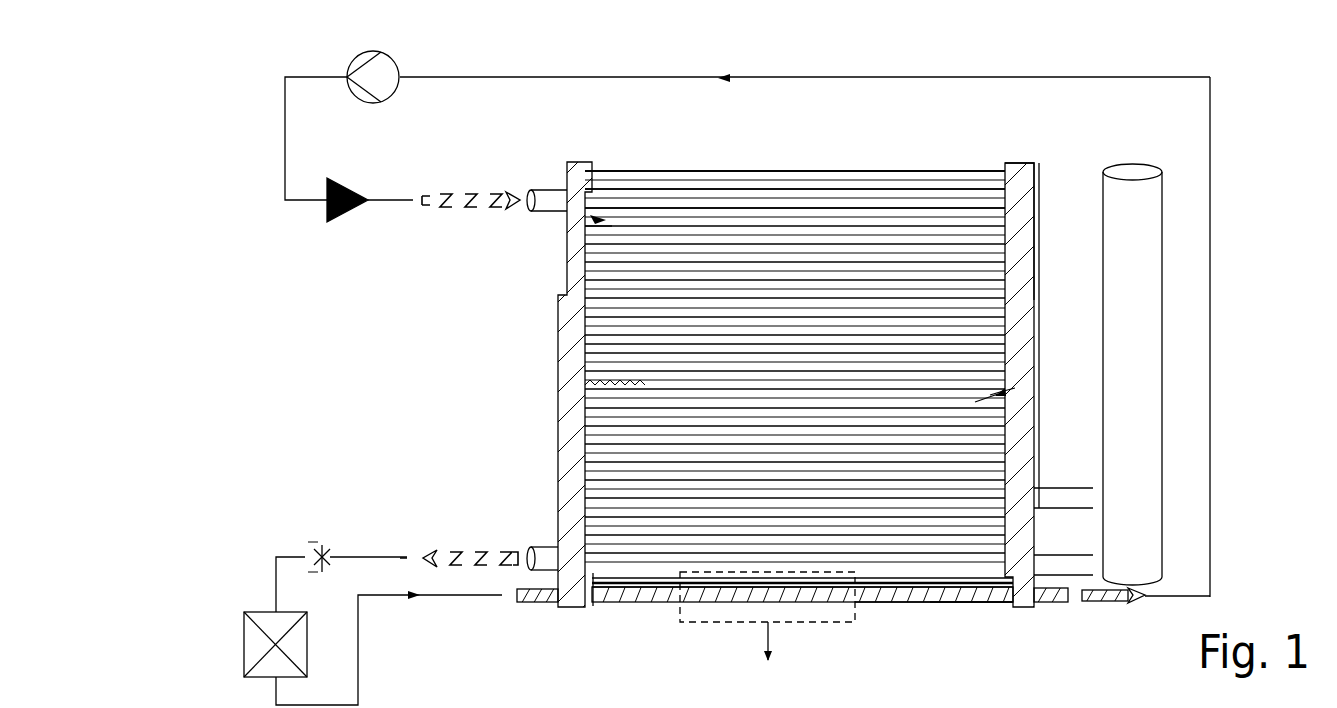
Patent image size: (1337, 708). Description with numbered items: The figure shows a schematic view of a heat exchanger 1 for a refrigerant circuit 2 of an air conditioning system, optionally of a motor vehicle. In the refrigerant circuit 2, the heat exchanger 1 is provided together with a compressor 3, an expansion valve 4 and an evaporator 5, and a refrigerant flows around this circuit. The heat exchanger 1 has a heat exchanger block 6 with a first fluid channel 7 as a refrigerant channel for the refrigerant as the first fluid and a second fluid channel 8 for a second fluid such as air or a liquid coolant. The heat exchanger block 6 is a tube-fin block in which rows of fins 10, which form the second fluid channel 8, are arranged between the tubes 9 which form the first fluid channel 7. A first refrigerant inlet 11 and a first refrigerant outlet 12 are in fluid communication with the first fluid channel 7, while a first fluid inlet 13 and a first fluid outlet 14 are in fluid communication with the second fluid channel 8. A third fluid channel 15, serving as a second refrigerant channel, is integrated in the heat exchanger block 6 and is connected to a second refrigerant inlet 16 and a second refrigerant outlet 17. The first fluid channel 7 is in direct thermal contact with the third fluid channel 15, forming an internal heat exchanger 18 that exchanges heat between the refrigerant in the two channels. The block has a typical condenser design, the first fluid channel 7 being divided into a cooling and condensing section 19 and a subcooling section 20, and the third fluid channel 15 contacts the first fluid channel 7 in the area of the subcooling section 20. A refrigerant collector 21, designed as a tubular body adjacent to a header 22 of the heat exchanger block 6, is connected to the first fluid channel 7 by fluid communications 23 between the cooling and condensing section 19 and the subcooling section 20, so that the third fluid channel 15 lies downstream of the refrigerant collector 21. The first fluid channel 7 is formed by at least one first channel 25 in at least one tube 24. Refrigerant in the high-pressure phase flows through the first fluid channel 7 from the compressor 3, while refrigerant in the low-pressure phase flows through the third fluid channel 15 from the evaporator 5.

The heat exchanger 1 is at (942, 152).
The refrigerant circuit 2 is at (826, 77).
The compressor 3 is at (380, 77).
The expansion valve 4 is at (322, 545).
The evaporator 5 is at (255, 645).
The heat exchanger block 6 is at (757, 205).
The first fluid channel 7 is at (680, 172).
The second fluid channel 8 is at (875, 190).
The tubes 9 is at (590, 343).
The fins 10 is at (560, 405).
The first refrigerant inlet 11 is at (548, 190).
The first refrigerant outlet 12 is at (545, 547).
The first fluid inlet 13 is at (985, 183).
The first fluid outlet 14 is at (583, 232).
The third fluid channel 15 is at (868, 606).
The second refrigerant inlet 16 is at (545, 612).
The second refrigerant outlet 17 is at (1042, 608).
The internal heat exchanger 18 is at (708, 622).
The cooling and condensing section 19 is at (1015, 388).
The subcooling section 20 is at (970, 606).
The refrigerant collector 21 is at (1138, 268).
The header 22 is at (560, 297).
The fluid communications 23 is at (1048, 488).
The tube 24 is at (628, 172).
The first channel 25 is at (802, 640).